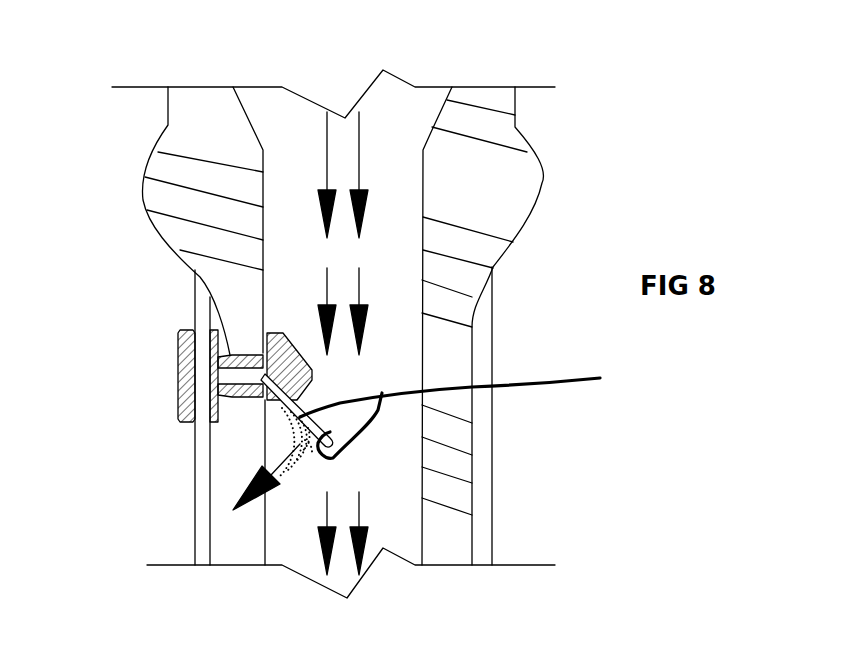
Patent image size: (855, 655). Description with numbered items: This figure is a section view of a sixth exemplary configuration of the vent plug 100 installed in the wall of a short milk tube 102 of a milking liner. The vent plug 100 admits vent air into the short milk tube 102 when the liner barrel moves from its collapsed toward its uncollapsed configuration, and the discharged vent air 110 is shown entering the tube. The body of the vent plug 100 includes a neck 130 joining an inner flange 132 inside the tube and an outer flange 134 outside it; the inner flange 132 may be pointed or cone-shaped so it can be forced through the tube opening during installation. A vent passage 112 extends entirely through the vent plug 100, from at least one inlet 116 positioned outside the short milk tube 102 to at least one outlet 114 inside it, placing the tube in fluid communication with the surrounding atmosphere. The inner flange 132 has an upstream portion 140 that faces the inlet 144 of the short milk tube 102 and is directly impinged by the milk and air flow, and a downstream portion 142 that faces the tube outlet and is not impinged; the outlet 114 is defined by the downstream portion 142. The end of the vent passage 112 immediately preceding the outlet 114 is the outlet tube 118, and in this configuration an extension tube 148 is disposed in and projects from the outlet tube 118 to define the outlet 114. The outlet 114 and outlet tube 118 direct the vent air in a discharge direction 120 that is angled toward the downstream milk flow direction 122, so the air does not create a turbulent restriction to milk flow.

The vent plug 100 is at (169, 379).
The short milk tube 102 is at (370, 192).
The discharged vent air 110 is at (290, 432).
The vent passage 112 is at (203, 322).
The outlet 114 is at (287, 445).
The inlet 116 is at (193, 327).
The outlet tube 118 is at (471, 391).
The discharge direction 120 is at (282, 477).
The milk flow direction 122 is at (360, 510).
The neck 130 is at (265, 420).
The inner flange 132 is at (286, 324).
The outer flange 134 is at (177, 350).
The upstream portion 140 is at (295, 370).
The downstream portion 142 is at (265, 427).
The inlet of short milk tube 144 is at (392, 103).
The extension tube 148 is at (385, 410).